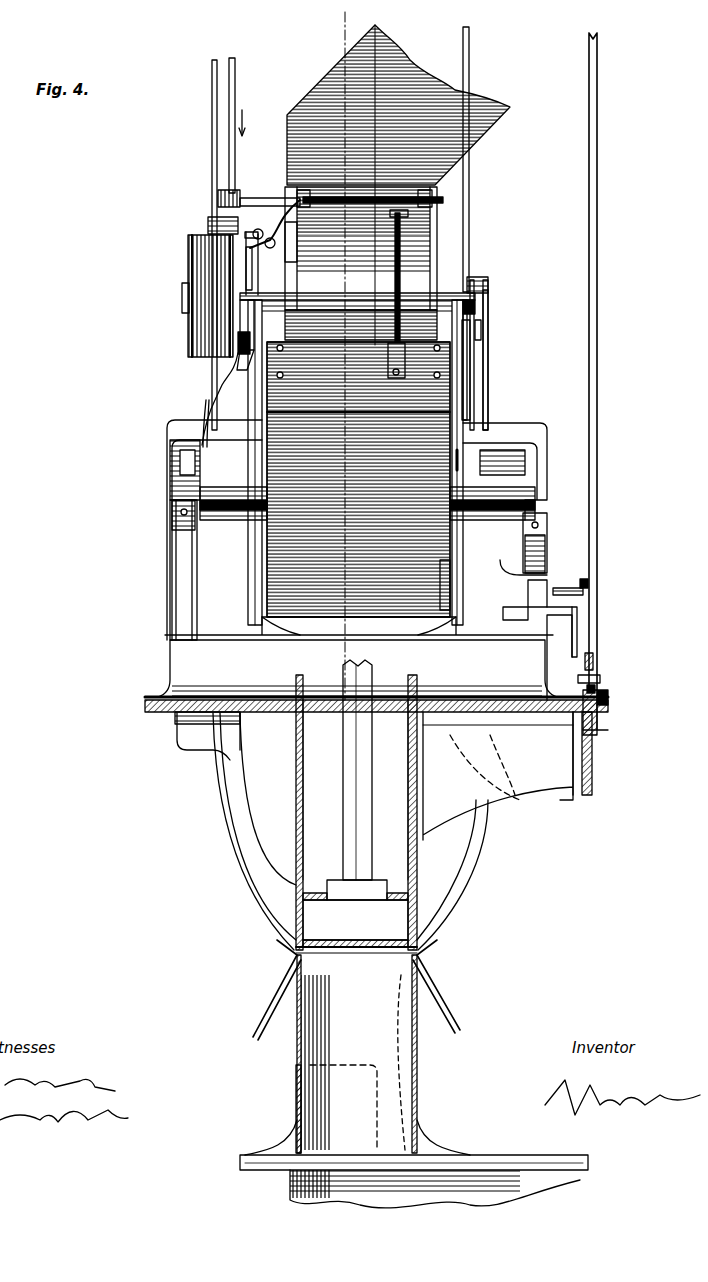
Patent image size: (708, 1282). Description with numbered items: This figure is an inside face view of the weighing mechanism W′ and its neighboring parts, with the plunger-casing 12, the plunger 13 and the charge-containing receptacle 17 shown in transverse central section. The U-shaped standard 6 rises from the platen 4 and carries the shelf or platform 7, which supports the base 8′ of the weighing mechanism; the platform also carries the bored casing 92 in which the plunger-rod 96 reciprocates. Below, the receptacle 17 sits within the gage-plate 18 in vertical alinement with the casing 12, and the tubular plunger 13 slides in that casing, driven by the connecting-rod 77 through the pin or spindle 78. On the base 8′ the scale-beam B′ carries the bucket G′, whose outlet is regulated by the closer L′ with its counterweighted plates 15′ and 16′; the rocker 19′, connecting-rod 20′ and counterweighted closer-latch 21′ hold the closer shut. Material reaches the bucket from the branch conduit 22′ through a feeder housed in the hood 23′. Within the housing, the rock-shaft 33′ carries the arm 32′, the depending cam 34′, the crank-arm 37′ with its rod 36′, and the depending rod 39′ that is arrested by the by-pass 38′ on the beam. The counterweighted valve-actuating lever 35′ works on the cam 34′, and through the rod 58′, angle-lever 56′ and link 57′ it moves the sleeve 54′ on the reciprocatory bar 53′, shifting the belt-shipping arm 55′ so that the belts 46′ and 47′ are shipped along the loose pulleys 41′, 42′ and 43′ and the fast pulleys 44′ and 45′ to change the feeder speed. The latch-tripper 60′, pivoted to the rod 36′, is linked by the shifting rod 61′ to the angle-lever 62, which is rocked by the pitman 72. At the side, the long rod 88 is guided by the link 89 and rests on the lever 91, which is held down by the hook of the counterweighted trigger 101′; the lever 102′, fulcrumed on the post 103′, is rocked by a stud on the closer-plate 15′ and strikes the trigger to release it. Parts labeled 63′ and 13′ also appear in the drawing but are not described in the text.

The branch pipe or conduit 22′ is at (413, 70).
The driving belt 46′ is at (212, 155).
The driving belt 47′ is at (235, 95).
The pitman or rod 72 is at (469, 230).
The rod 88 is at (597, 296).
The sleeve or hub 54′ is at (237, 190).
The belt-shipping arm 55′ is at (215, 217).
The link 57′ is at (292, 198).
The arm 32′ is at (262, 295).
The rod 58′ is at (246, 262).
The cam 34′ is at (190, 300).
The loose pulley 41′ is at (183, 298).
The fast pulley 44′ is at (192, 330).
The loose pulley 42′ is at (238, 345).
The loose pulley 43′ is at (230, 350).
The fast pulley 45′ is at (222, 385).
The depending rod 39′ is at (203, 412).
The valve-actuating lever 35′ is at (243, 372).
The housing or hood 23′ is at (361, 263).
The transversely-reciprocatory bar 53′ is at (392, 197).
The angle-lever 56′ is at (297, 228).
The rock-shaft 33′ is at (395, 290).
The rocker 19′ is at (388, 355).
The counterweighted end plate 16′ is at (268, 565).
The closer-latch 21′ is at (448, 397).
The load-receiver or bucket G′ is at (393, 481).
The stop 63′ is at (457, 460).
The counterweighted closer-plate 15′ is at (445, 575).
The closer L′ is at (396, 602).
The by-pass 38′ is at (172, 455).
The scale-beam B′ is at (195, 570).
The crank-arm 37′ is at (488, 290).
The angle-lever 62 is at (476, 320).
The shifting rod or link 61′ is at (481, 332).
The latch-tripper 60′ is at (470, 360).
The rod 36′ is at (488, 395).
The weighing mechanism W′ is at (522, 392).
The connecting-rod 20′ is at (467, 400).
The post 103′ is at (547, 540).
The counterweighted lever 102′ is at (547, 570).
The guide or link 89 is at (588, 582).
The latch or trigger 101′ is at (577, 640).
The lever 91 is at (600, 677).
The plunger-rod 96 is at (596, 688).
The base 8′ is at (376, 657).
The shelf or platform 7 is at (160, 712).
The packing device or plunger 13 is at (356, 812).
The connecting-rod 77 is at (352, 714).
The casing 12 is at (303, 896).
The pin or spindle 78 is at (400, 902).
The U-shaped standard 6 is at (222, 858).
The casing 92 is at (498, 776).
The lower tube 13′ is at (366, 948).
The charge-containing receptacle 17 is at (417, 1045).
The gage-plate 18 is at (296, 1098).
The platen or receptacle support 4 is at (492, 1160).